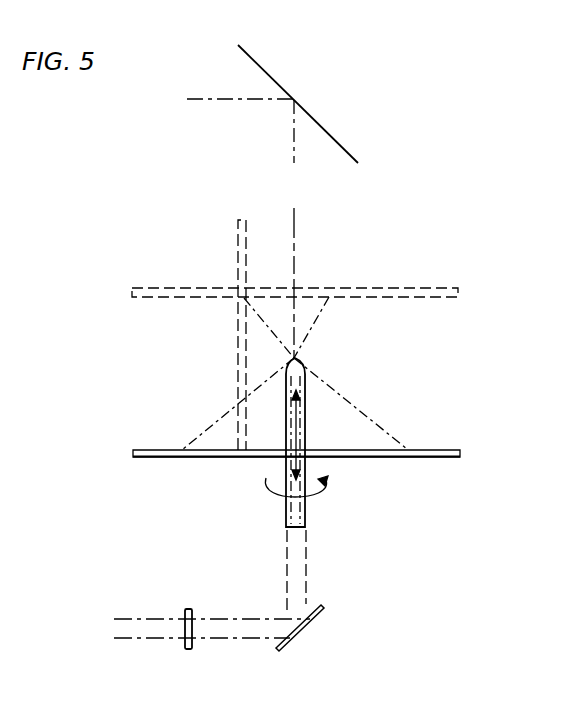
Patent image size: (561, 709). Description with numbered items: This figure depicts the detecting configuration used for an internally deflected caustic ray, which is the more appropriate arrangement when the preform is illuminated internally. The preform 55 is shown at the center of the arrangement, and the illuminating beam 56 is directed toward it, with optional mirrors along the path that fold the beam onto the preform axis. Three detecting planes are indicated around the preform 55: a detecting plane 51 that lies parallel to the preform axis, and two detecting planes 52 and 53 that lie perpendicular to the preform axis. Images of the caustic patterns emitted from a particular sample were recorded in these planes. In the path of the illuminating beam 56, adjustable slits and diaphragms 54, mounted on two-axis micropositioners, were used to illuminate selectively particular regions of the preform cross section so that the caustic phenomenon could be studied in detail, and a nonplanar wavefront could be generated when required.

The detecting plane 51 is at (237, 352).
The detecting plane 52 is at (423, 450).
The detecting plane 53 is at (404, 287).
The adjustable slits and diaphragms 54 is at (188, 608).
The preform 55 is at (306, 513).
The illuminating beam 56 is at (117, 638).